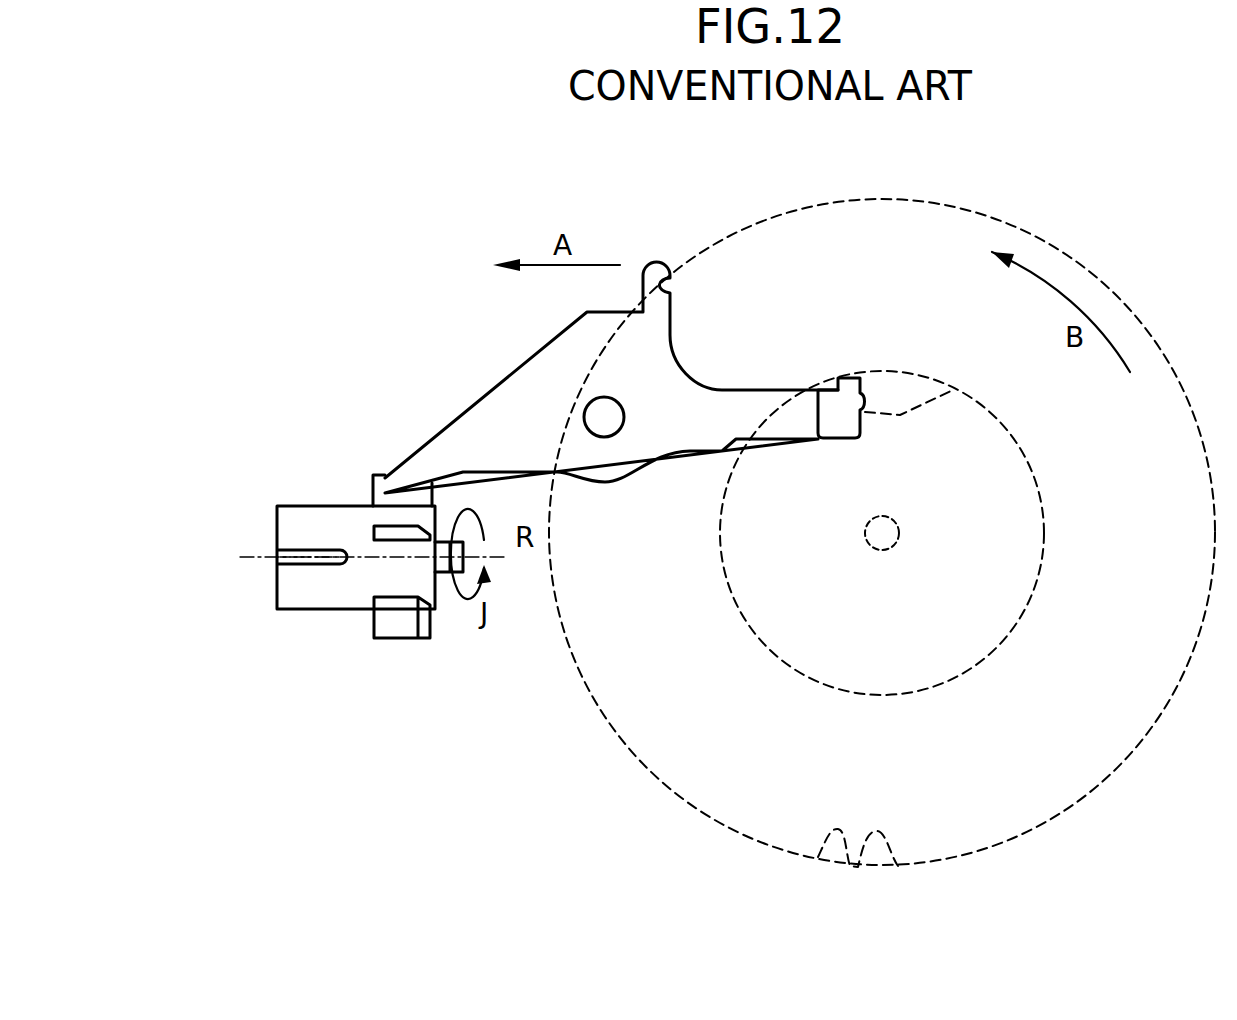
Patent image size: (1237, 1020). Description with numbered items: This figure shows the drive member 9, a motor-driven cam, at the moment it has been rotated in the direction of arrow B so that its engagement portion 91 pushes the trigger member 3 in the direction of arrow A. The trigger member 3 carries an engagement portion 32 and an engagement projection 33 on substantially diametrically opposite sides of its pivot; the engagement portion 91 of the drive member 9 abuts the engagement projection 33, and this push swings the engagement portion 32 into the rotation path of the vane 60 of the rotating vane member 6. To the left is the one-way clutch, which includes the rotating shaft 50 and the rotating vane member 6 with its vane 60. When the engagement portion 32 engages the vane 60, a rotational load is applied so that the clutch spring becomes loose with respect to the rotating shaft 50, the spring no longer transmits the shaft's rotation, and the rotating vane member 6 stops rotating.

The trigger member 3 is at (562, 377).
The engagement portion 32 is at (433, 457).
The engagement projection 33 is at (833, 405).
The engagement portion 91 is at (893, 387).
The drive member 9 is at (1097, 768).
The rotating vane member 6 is at (307, 597).
The vane 60 is at (398, 623).
The rotating shaft 50 is at (440, 568).